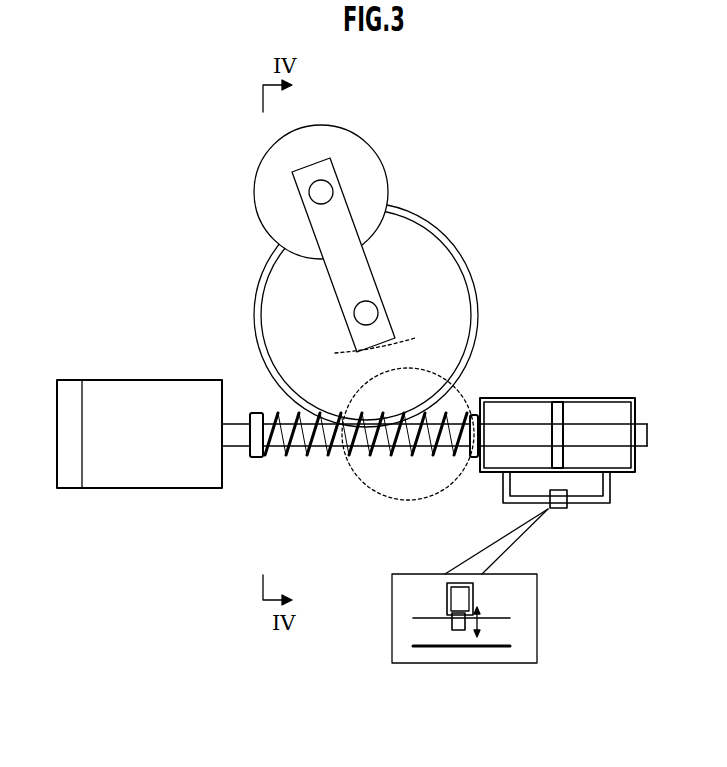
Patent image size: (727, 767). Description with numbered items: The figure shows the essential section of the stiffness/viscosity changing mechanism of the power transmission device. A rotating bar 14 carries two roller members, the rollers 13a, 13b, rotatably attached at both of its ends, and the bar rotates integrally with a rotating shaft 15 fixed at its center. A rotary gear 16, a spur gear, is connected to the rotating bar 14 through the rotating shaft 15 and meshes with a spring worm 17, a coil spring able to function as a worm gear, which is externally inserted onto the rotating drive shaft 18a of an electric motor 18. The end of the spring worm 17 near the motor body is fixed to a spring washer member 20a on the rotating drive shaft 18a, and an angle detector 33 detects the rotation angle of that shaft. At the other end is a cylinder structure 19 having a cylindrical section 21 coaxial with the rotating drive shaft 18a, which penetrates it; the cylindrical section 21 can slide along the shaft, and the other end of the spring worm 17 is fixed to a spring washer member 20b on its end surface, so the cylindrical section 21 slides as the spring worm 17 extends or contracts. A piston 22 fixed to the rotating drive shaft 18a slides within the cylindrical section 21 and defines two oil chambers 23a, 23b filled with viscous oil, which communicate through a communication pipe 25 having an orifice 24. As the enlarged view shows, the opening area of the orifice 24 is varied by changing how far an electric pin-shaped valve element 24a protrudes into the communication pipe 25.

The roller 13a is at (358, 140).
The roller 13b is at (396, 500).
The rotating bar 14 is at (372, 268).
The rotating shaft 15 is at (377, 301).
The rotary gear 16 is at (478, 298).
The spring worm 17 is at (298, 456).
The electric motor 18 is at (139, 411).
The rotating drive shaft 18a is at (244, 447).
The cylinder structure 19 is at (528, 517).
The spring washer member 20a is at (255, 413).
The spring washer member 20b is at (474, 458).
The cylindrical section 21 is at (486, 398).
The piston 22 is at (557, 405).
The oil chamber 23a is at (523, 410).
The oil chamber 23b is at (605, 410).
The orifice 24 is at (557, 509).
The electric pin-shaped valve element 24a is at (453, 623).
The communication pipe 25 is at (595, 503).
The angle detector 33 is at (72, 380).